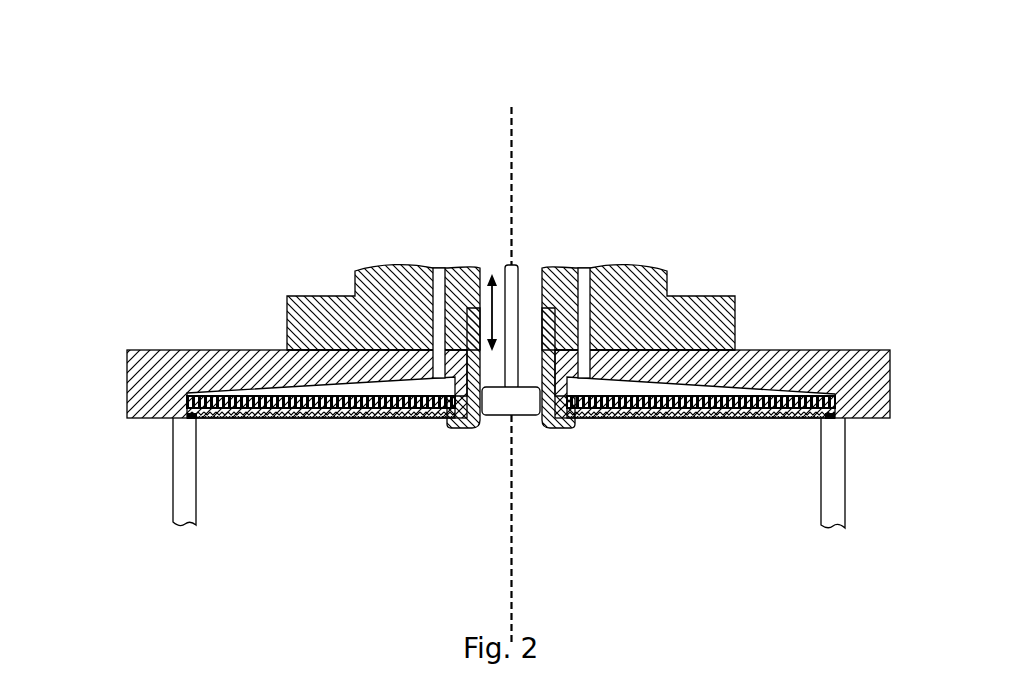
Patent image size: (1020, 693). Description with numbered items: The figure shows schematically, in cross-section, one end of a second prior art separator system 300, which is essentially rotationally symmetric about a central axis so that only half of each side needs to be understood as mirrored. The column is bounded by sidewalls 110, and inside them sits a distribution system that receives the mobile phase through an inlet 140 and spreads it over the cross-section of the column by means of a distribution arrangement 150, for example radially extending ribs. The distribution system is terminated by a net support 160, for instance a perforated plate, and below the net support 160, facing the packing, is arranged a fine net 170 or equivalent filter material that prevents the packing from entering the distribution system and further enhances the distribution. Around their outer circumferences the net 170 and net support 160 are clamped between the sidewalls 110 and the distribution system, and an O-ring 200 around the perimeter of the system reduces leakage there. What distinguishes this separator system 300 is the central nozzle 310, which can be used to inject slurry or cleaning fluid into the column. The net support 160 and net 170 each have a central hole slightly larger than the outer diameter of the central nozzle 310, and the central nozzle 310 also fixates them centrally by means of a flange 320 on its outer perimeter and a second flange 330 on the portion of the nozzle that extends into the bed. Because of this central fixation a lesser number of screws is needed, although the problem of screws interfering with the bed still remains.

The sidewalls 110 is at (180, 483).
The inlet 140 is at (438, 262).
The distribution arrangement 150 is at (343, 417).
The net support 160 is at (763, 418).
The net 170 is at (665, 418).
The O-ring 200 is at (197, 420).
The separator system 300 is at (181, 140).
The central nozzle 310 is at (536, 443).
The flange 320 is at (457, 430).
The second flange 330 is at (388, 417).